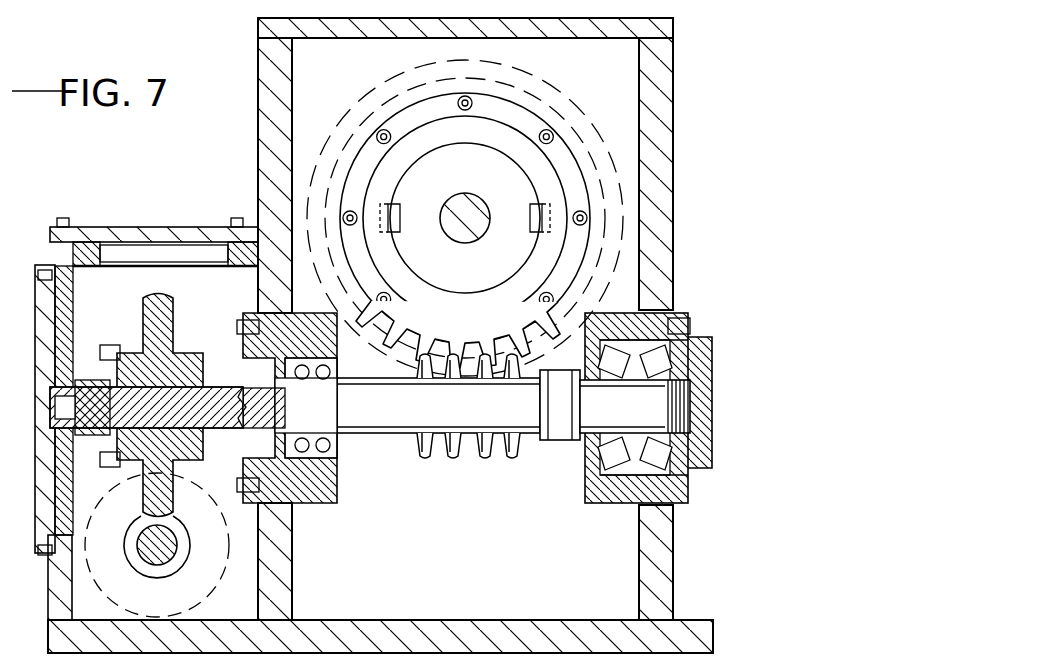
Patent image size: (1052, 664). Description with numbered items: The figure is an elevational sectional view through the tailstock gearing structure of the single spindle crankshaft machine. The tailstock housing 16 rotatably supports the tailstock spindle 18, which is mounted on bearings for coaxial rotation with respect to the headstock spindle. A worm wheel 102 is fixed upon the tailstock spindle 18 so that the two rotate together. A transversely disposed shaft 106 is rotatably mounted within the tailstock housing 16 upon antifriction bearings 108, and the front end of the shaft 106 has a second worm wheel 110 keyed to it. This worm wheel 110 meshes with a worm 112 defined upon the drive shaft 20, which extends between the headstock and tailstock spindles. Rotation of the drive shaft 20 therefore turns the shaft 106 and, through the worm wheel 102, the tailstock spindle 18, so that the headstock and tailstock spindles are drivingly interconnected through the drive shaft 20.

The tailstock housing 16 is at (673, 210).
The tailstock spindle 18 is at (419, 157).
The drive shaft 20 is at (148, 575).
The worm wheel 102 is at (380, 340).
The transversely disposed shaft 106 is at (397, 440).
The antifriction bearings 108 is at (337, 458).
The worm wheel 110 is at (173, 327).
The worm 112 is at (132, 530).